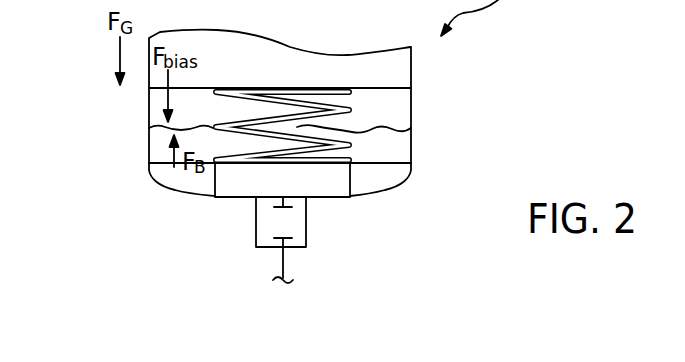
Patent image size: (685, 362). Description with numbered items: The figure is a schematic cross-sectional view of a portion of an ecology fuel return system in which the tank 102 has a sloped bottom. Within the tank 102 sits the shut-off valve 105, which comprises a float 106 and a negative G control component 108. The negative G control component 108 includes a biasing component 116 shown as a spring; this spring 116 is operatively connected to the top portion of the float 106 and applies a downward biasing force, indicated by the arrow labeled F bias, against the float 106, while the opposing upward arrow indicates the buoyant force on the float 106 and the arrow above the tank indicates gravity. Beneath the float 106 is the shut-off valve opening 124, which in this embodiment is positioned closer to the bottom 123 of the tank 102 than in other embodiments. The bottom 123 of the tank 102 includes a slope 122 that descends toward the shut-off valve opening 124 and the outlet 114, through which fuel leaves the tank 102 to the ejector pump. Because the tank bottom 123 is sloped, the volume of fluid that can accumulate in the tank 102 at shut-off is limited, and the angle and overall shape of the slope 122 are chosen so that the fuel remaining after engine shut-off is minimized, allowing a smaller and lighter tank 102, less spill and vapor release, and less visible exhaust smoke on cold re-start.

The tank 102 is at (411, 72).
The negative G control component 108 is at (395, 108).
The biasing component 116 is at (347, 143).
The slope 122 is at (178, 186).
The shut-off valve 105 is at (369, 190).
The float 106 is at (302, 188).
The shut-off valve opening 124 is at (256, 199).
The bottom 123 is at (331, 208).
The outlet 114 is at (289, 248).